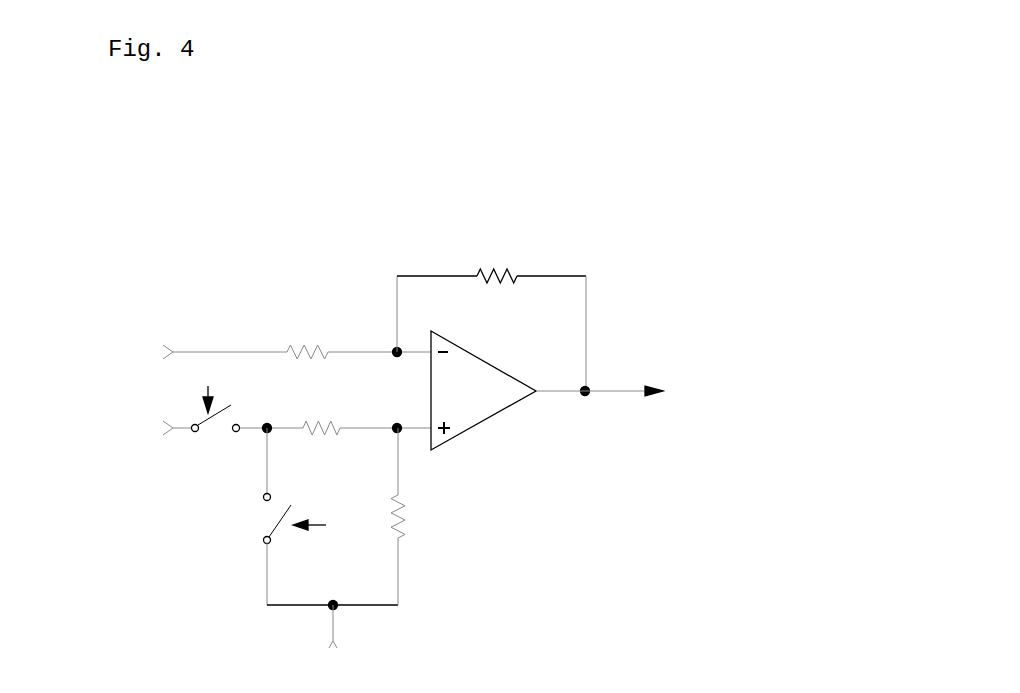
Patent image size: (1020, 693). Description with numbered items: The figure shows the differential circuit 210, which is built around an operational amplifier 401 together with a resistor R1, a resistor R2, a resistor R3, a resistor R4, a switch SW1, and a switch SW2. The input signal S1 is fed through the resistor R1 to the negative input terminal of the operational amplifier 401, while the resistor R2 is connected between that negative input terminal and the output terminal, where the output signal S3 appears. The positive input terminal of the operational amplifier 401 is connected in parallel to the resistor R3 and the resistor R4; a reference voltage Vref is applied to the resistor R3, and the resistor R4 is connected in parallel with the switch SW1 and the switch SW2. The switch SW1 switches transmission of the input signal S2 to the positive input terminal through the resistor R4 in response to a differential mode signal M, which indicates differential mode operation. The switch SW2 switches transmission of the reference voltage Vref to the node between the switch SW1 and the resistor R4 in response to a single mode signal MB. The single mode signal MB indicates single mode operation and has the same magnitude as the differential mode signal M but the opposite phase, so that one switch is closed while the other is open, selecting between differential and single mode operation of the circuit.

The differential circuit 210 is at (412, 401).
The operational amplifier 401 is at (482, 360).
The input signal S1 is at (207, 351).
The input signal S2 is at (159, 427).
The output signal S3 is at (616, 390).
The resistor R1 is at (307, 335).
The resistor R2 is at (491, 259).
The resistor R3 is at (413, 516).
The resistor R4 is at (321, 442).
The switch SW1 is at (216, 434).
The switch SW2 is at (251, 519).
The differential mode signal M is at (209, 388).
The single mode signal MB is at (325, 524).
The reference voltage Vref is at (334, 643).